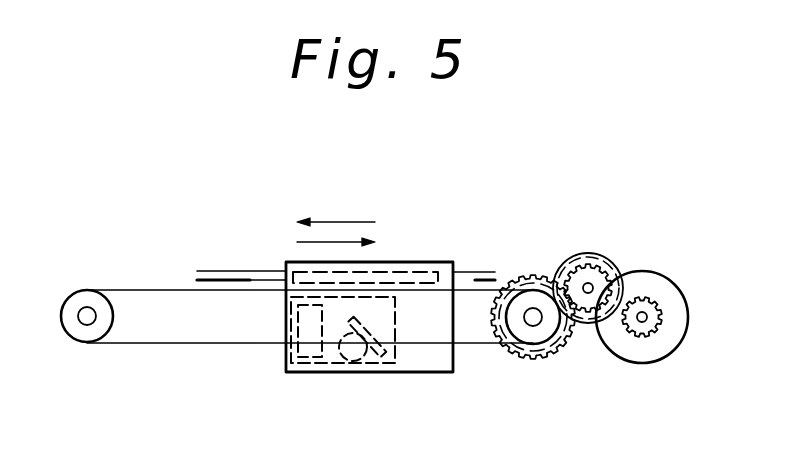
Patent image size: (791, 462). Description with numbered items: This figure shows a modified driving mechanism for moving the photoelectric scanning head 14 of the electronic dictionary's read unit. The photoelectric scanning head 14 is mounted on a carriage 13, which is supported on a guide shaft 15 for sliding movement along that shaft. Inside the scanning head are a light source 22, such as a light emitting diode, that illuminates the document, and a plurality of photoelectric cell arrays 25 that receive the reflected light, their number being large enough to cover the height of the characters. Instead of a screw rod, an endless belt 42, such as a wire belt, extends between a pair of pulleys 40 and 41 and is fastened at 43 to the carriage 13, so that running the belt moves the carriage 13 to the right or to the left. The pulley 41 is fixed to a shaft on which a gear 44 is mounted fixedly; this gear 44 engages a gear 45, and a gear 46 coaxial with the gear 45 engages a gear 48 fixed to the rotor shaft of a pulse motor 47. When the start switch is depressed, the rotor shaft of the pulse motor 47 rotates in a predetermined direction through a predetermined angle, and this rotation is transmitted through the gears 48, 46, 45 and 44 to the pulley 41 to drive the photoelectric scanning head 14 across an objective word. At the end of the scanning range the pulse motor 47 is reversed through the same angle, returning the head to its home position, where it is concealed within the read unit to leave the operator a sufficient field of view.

The carriage 13 is at (385, 373).
The photoelectric scanning head 14 is at (310, 362).
The guide shaft 15 is at (237, 271).
The light source 22 is at (348, 363).
The photoelectric cell arrays 25 is at (285, 350).
The pulley 40 is at (85, 290).
The pulley 41 is at (552, 353).
The endless belt 42 is at (175, 345).
The fastening point 43 is at (386, 291).
The gear 44 is at (502, 357).
The gear 45 is at (593, 265).
The gear 46 is at (615, 253).
The pulse motor 47 is at (683, 293).
The gear 48 is at (650, 298).